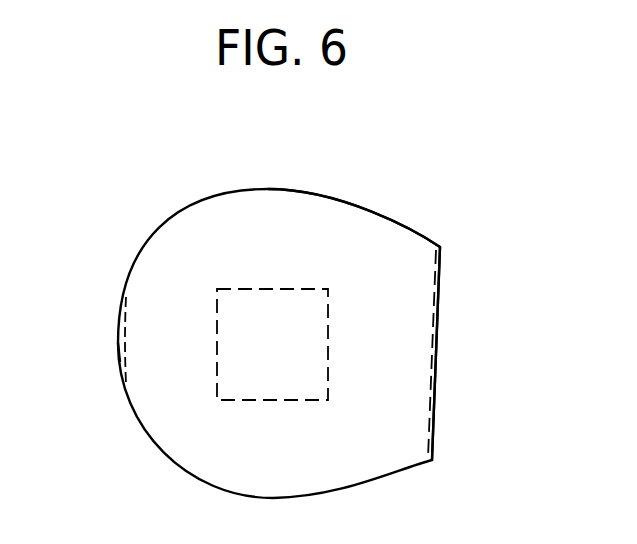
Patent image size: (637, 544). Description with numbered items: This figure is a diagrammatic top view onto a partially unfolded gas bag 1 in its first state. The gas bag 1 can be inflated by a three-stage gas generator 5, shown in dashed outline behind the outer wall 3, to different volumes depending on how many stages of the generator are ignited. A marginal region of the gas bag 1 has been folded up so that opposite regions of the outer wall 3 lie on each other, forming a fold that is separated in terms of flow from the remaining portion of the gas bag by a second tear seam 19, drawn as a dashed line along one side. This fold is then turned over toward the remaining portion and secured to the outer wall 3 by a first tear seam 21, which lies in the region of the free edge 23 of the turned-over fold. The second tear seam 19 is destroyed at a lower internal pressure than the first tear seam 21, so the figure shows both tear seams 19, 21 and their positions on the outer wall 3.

The gas bag 1 is at (207, 185).
The outer wall 3 is at (304, 192).
The three-stage gas generator 5 is at (287, 386).
The second tear seam 19 is at (435, 338).
The first tear seam 21 is at (126, 322).
The free edge 23 is at (121, 362).